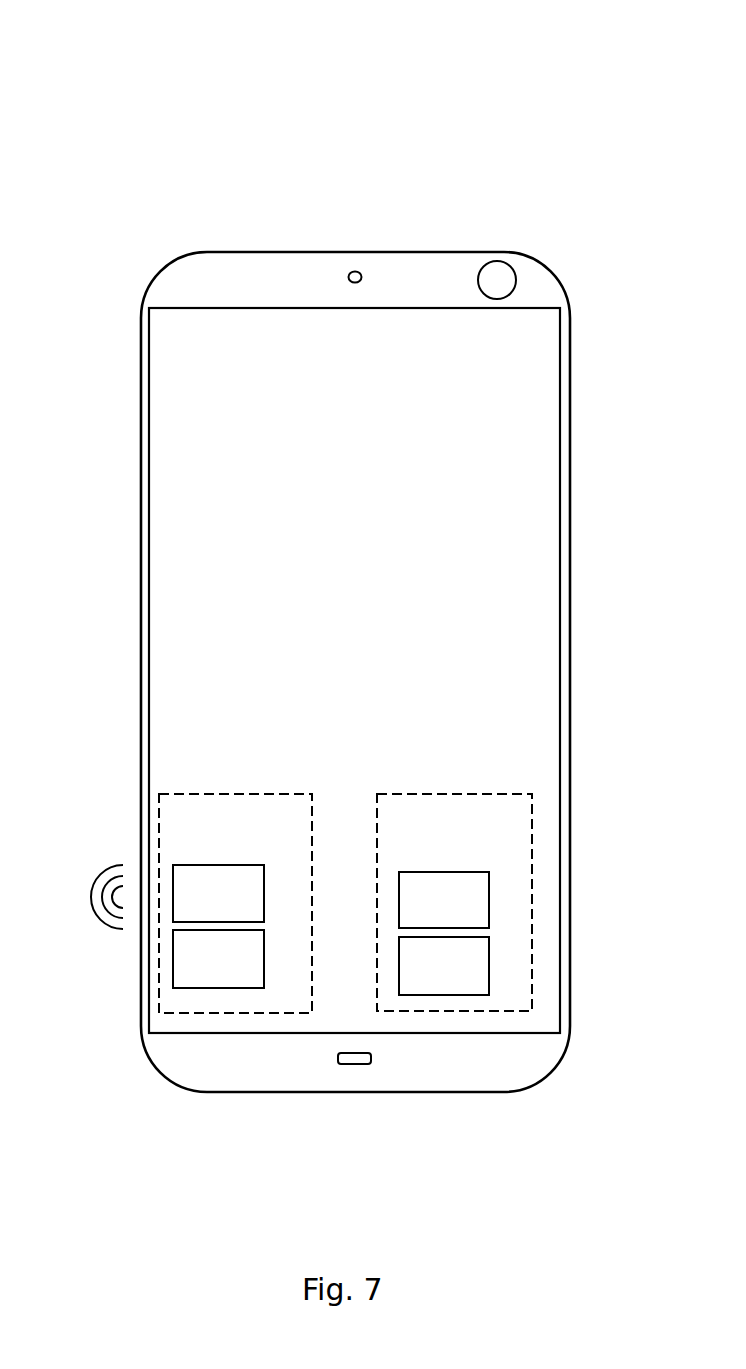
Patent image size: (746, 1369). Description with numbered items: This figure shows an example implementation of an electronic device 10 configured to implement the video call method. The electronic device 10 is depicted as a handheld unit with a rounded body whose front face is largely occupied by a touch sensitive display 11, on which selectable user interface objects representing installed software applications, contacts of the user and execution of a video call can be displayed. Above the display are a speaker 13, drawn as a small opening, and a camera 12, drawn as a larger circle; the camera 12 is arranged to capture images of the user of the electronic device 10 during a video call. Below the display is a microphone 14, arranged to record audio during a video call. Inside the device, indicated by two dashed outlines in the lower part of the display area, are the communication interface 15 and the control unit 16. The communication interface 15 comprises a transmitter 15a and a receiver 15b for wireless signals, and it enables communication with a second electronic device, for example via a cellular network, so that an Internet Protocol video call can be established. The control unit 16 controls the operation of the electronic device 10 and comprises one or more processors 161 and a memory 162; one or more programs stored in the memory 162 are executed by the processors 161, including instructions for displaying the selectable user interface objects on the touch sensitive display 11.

The electronic device 10 is at (150, 158).
The touch sensitive display 11 is at (180, 1033).
The camera 12 is at (513, 270).
The speaker 13 is at (362, 270).
The microphone 14 is at (358, 1065).
The communication interface 15 is at (290, 843).
The transmitter 15a is at (218, 893).
The receiver 15b is at (218, 959).
The control unit 16 is at (512, 843).
The processors 161 is at (444, 900).
The memory 162 is at (444, 966).